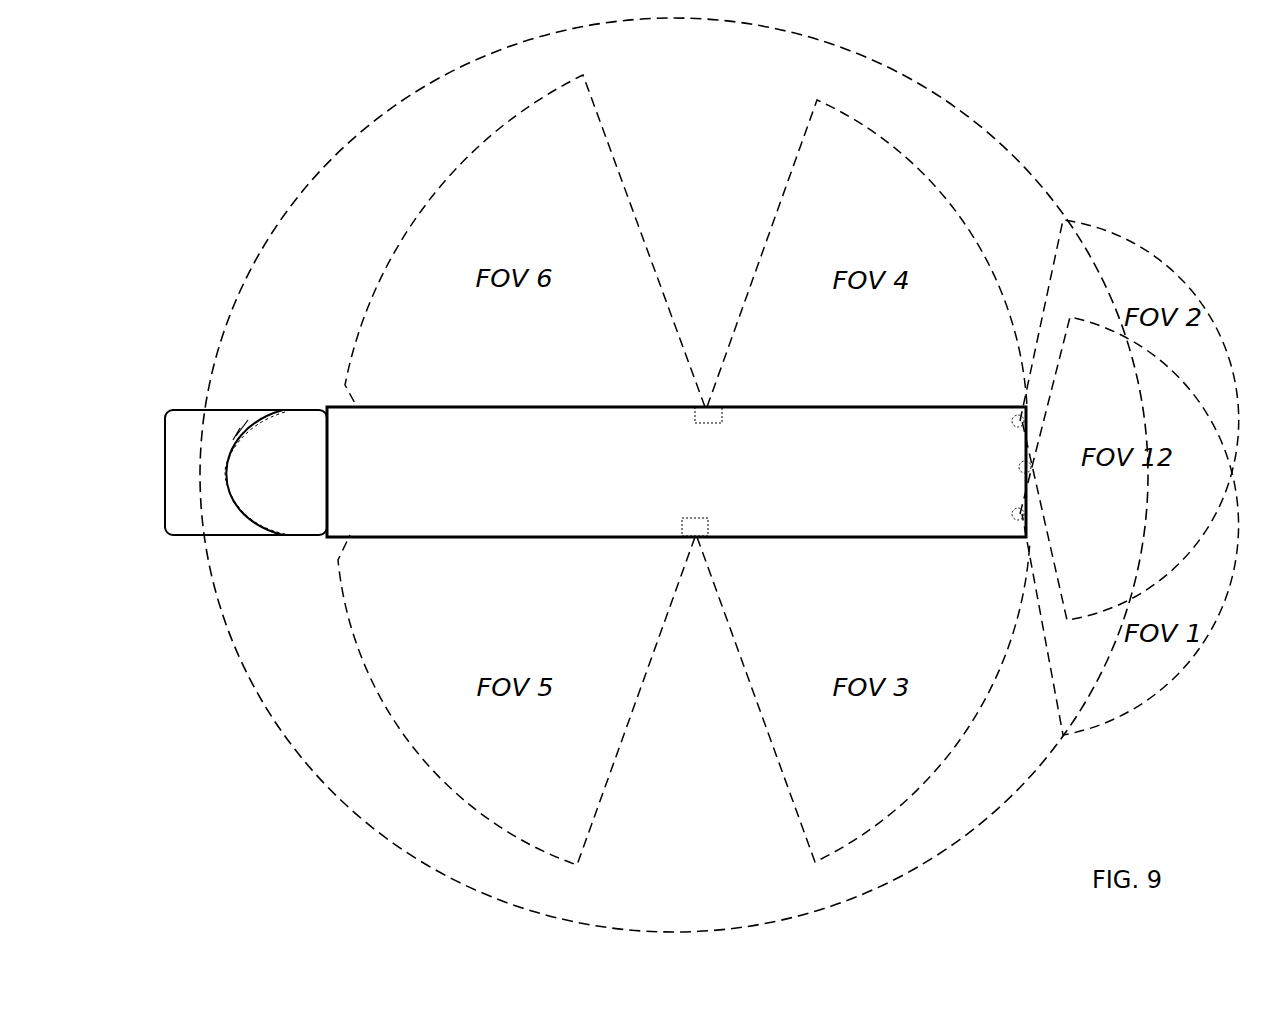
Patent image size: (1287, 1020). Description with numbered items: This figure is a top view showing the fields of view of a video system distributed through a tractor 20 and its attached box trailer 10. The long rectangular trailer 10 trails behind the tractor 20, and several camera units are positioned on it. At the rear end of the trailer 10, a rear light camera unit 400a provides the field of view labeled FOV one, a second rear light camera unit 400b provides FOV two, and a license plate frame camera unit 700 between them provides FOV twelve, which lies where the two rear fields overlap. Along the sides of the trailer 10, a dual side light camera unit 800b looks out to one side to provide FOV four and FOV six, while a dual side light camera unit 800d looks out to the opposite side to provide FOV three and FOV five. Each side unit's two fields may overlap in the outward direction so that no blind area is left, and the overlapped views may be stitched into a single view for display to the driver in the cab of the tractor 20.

The box trailer 10 is at (676, 472).
The tractor 20 is at (246, 472).
The license plate frame camera unit 700 is at (1019, 467).
The rear light camera unit 400a is at (1012, 514).
The rear light camera unit 400b is at (1012, 421).
The dual side light camera unit 800b is at (700, 407).
The dual side light camera unit 800d is at (688, 518).